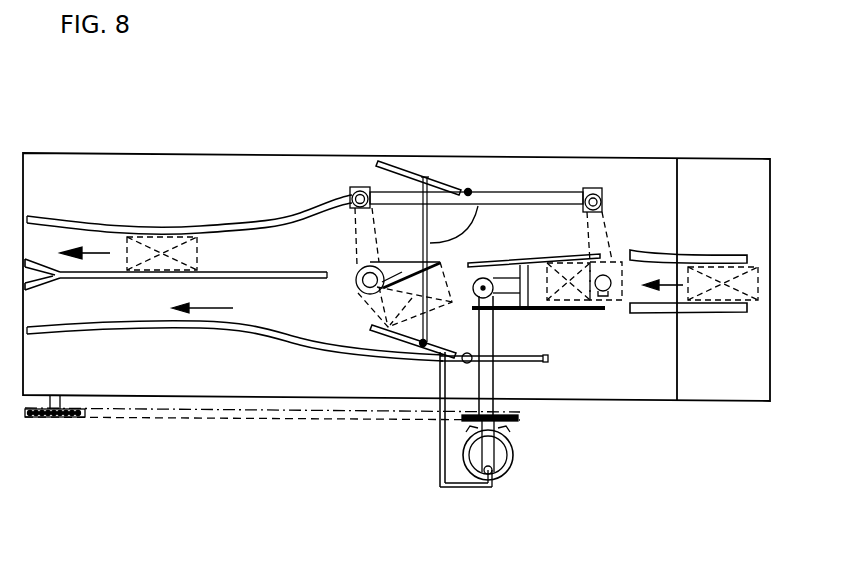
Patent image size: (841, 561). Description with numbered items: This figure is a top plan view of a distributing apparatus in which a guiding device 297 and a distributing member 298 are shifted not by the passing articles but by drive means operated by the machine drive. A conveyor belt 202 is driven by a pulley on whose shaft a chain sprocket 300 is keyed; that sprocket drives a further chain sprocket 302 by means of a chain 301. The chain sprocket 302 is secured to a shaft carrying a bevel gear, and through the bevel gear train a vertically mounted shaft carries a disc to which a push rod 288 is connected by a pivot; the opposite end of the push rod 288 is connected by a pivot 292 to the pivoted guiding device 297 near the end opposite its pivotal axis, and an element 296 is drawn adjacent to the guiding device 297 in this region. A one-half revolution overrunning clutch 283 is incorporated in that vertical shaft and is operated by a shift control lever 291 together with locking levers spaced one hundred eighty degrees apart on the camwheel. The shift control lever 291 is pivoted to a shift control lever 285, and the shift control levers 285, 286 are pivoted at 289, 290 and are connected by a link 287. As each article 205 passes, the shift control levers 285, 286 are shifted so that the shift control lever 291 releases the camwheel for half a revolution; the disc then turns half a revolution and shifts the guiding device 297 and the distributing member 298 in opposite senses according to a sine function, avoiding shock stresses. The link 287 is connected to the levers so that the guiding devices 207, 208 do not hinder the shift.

The conveyor belt 202 is at (345, 373).
The article 205 is at (712, 277).
The guiding device 207 is at (190, 232).
The guiding device 208 is at (150, 326).
The one-half revolution overrunning clutch 283 is at (508, 473).
The shift control lever 285 is at (420, 341).
The shift control lever 286 is at (381, 162).
The link 287 is at (478, 206).
The push rod 288 is at (487, 368).
The pivot 289 is at (468, 190).
The pivot 290 is at (466, 362).
The shift control lever 291 is at (440, 468).
The pivot 292 is at (545, 206).
The upper guide plate 296 is at (570, 372).
The guiding device 297 is at (608, 399).
The distributing member 298 is at (365, 299).
The chain sprocket 300 is at (62, 418).
The chain 301 is at (150, 417).
The chain sprocket 302 is at (510, 423).